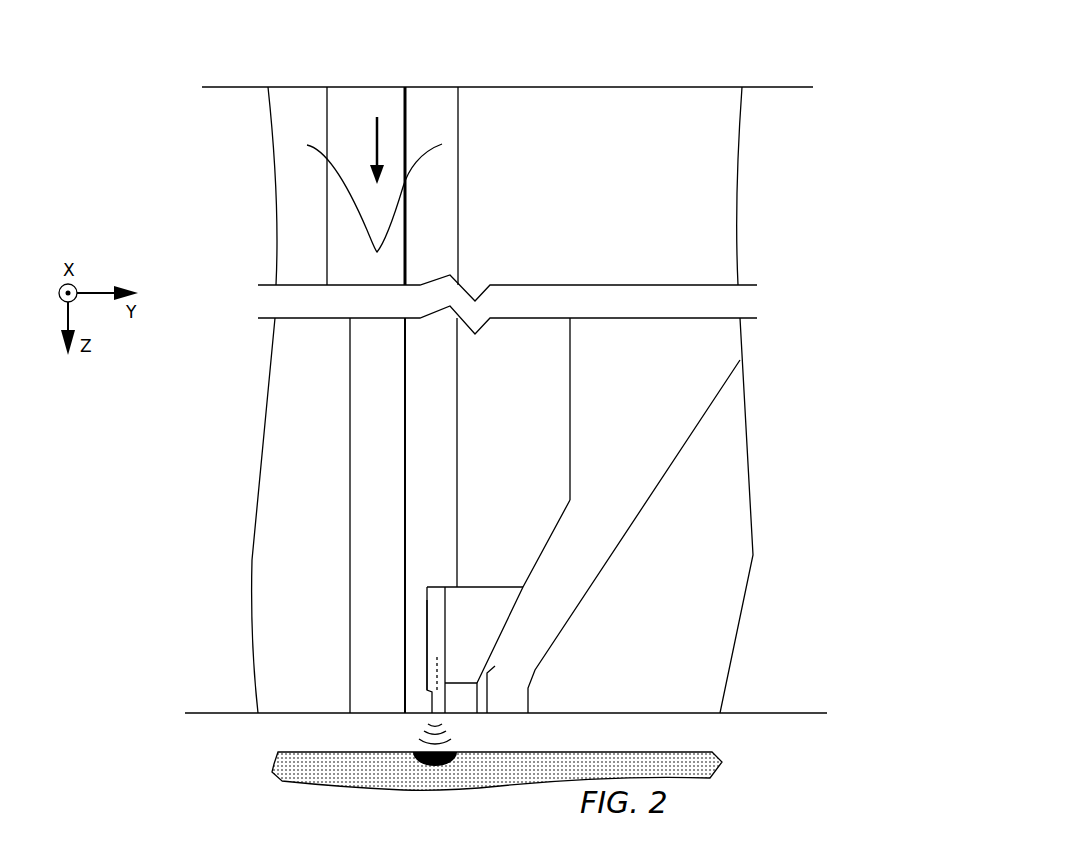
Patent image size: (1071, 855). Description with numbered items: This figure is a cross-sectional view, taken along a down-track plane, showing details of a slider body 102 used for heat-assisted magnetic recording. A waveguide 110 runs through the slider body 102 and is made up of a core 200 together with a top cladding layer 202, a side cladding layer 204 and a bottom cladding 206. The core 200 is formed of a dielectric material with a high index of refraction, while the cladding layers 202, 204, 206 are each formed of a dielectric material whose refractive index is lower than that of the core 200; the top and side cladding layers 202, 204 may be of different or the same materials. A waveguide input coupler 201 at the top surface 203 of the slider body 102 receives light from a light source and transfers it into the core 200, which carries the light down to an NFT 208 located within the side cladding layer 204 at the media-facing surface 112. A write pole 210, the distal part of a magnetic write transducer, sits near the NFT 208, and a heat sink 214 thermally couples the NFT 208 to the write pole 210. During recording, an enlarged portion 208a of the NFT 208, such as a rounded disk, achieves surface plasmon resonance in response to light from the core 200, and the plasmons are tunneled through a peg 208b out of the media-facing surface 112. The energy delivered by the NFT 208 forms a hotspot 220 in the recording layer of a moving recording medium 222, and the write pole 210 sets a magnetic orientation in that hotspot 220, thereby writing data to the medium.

The slider body 102 is at (255, 38).
The waveguide 110 is at (258, 200).
The media-facing surface 112 is at (817, 714).
The core 200 is at (393, 382).
The waveguide input coupler 201 is at (372, 96).
The top cladding layer 202 is at (540, 382).
The top surface 203 is at (778, 86).
The side cladding layer 204 is at (451, 376).
The bottom cladding 206 is at (278, 413).
The NFT 208 is at (436, 568).
The enlarged portion 208a is at (436, 621).
The peg 208b is at (430, 706).
The write pole 210 is at (530, 674).
The heat sink 214 is at (473, 592).
The hotspot 220 is at (432, 768).
The recording medium 222 is at (675, 756).